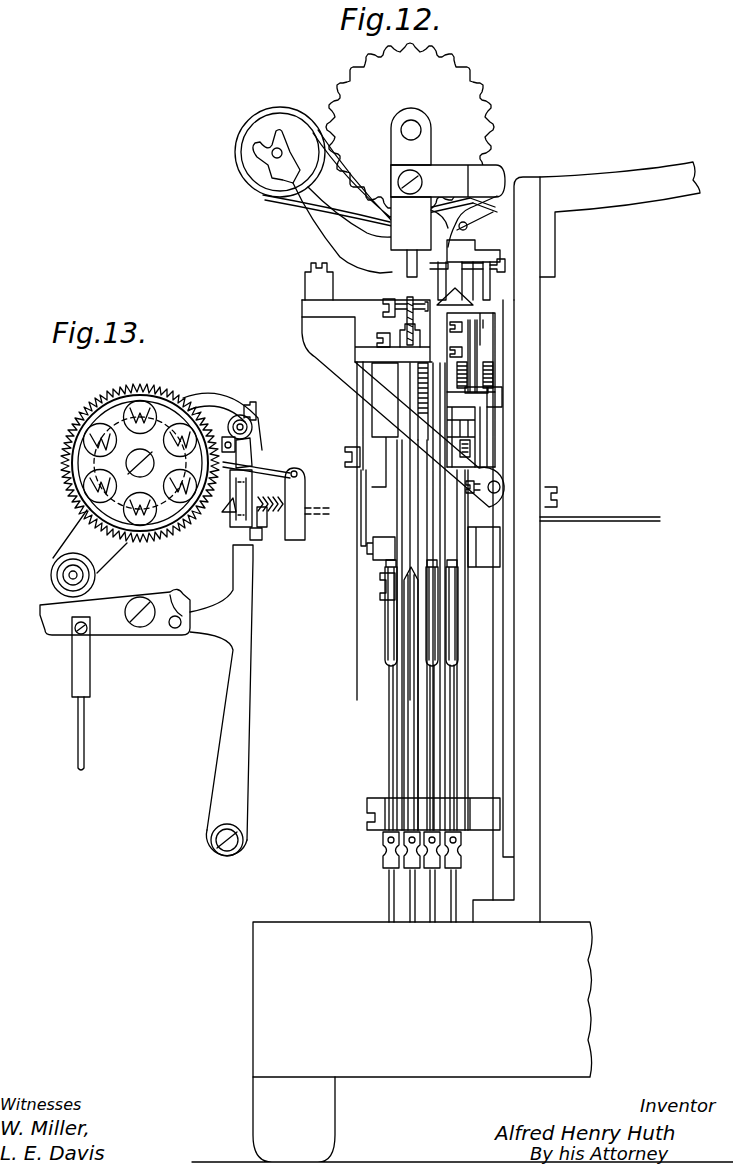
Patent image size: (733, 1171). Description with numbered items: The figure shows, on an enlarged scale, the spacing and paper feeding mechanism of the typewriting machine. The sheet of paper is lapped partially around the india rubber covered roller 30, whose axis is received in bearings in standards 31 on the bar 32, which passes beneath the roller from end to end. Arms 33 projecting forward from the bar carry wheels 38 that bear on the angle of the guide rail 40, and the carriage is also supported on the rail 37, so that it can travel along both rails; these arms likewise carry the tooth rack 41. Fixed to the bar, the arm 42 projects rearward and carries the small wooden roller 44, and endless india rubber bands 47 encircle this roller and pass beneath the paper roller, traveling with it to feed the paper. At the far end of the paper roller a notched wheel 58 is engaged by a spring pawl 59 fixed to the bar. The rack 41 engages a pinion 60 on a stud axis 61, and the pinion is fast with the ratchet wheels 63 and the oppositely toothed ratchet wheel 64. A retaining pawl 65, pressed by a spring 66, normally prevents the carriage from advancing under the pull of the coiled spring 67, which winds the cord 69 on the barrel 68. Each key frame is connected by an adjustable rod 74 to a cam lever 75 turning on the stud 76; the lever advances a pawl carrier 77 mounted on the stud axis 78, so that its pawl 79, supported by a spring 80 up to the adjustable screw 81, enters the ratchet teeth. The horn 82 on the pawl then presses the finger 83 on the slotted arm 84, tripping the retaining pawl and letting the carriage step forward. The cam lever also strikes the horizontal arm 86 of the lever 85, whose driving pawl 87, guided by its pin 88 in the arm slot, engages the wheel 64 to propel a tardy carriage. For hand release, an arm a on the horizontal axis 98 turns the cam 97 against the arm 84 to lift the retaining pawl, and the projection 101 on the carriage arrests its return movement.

In FIG. 12, the india rubber covered roller 30 is at (447, 60).
In FIG. 12, the notched wheel 58 is at (411, 83).
In FIG. 12, the standards 31 is at (448, 179).
In FIG. 12, the bar 32 is at (420, 263).
In FIG. 12, the small wooden roller 44 is at (272, 120).
In FIG. 12, the arm 42 is at (314, 224).
In FIG. 12, the endless india rubber bands 47 is at (276, 200).
In FIG. 12, the spring pawl 59 is at (475, 226).
In FIG. 12, the arm 33 is at (473, 248).
In FIG. 12, the wheel 38 is at (462, 285).
In FIG. 12, the guide rail 40 is at (455, 297).
In FIG. 12, the rail 37 is at (305, 291).
In FIG. 12, the coiled spring 67 is at (385, 382).
In FIG. 12, the cord 69 is at (405, 318).
In FIG. 12, the projection 101 is at (486, 325).
In FIG. 12, the tooth rack 41 is at (470, 362).
In FIG. 12, the ratchet wheels 63 is at (428, 386).
In FIG. 13, the ratchet wheels 63 is at (100, 410).
In FIG. 12, the ratchet wheel 64 is at (495, 376).
In FIG. 12, the pinion 60 is at (503, 396).
In FIG. 13, the pinion 60 is at (146, 412).
In FIG. 12, the slotted arm 84 is at (478, 416).
In FIG. 13, the slotted arm 84 is at (268, 494).
In FIG. 12, the driving pawl 87 is at (487, 443).
In FIG. 13, the driving pawl 87 is at (254, 450).
In FIG. 12, the horizontal axis 98 is at (503, 482).
In FIG. 13, the horizontal axis 98 is at (312, 516).
In FIG. 12, the arm a is at (497, 499).
In FIG. 12, the barrel 68 is at (362, 505).
In FIG. 12, the horizontal arm 86 is at (373, 552).
In FIG. 13, the horizontal arm 86 is at (52, 580).
In FIG. 12, the lever 85 is at (497, 553).
In FIG. 13, the lever 85 is at (90, 541).
In FIG. 12, the stationary axis or stud 76 is at (380, 580).
In FIG. 13, the stationary axis or stud 76 is at (142, 620).
In FIG. 12, the cam lever 75 is at (440, 597).
In FIG. 13, the cam lever 75 is at (115, 612).
In FIG. 12, the pawl carrier 77 is at (400, 712).
In FIG. 13, the pawl carrier 77 is at (221, 692).
In FIG. 12, the stud axis 78 is at (383, 808).
In FIG. 13, the stud axis 78 is at (240, 844).
In FIG. 12, the adjustable rod 74 is at (405, 885).
In FIG. 13, the adjustable rod 74 is at (84, 742).
In FIG. 13, the stud axis 61 is at (140, 463).
In FIG. 13, the pawl 65 is at (222, 421).
In FIG. 13, the spring 66 is at (252, 422).
In FIG. 13, the projecting pin or horn 82 is at (237, 442).
In FIG. 13, the pin 88 is at (256, 464).
In FIG. 13, the pawl 79 is at (294, 470).
In FIG. 13, the finger 83 is at (226, 498).
In FIG. 13, the adjustable screw 81 is at (230, 503).
In FIG. 13, the cam 97 is at (258, 536).
In FIG. 13, the spring 80 is at (285, 535).